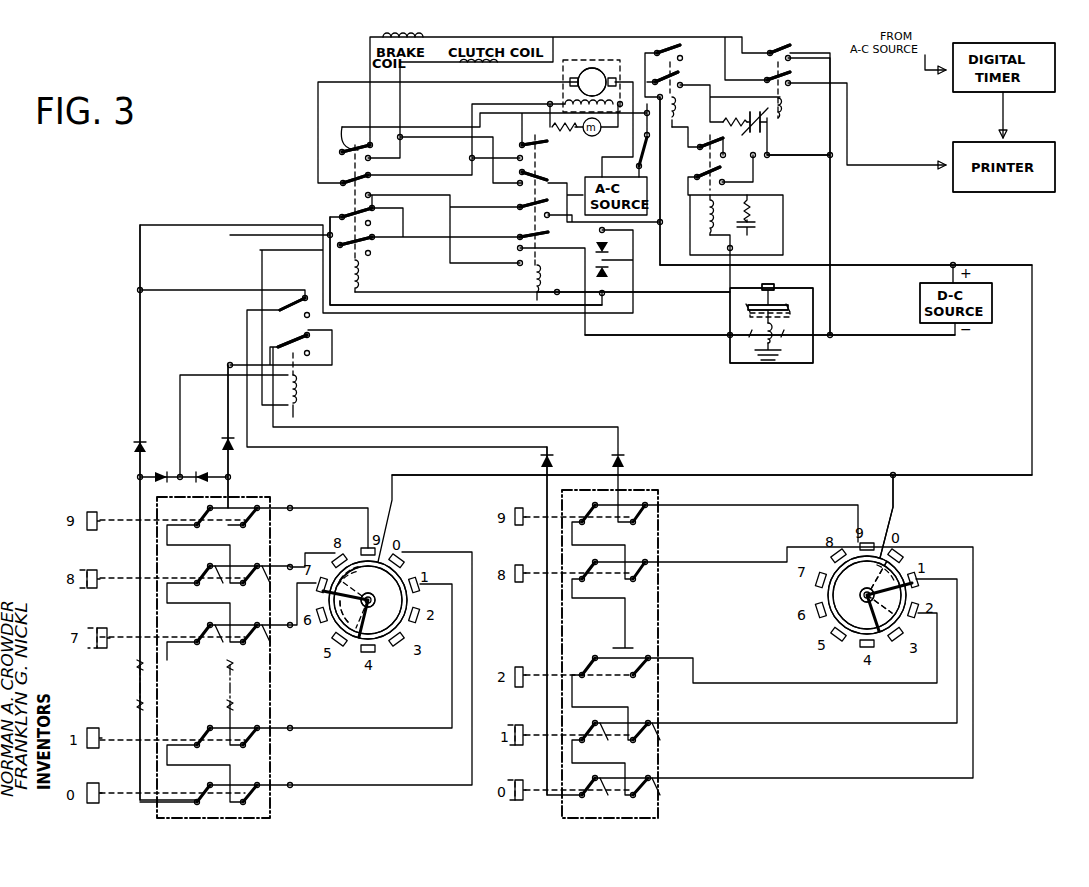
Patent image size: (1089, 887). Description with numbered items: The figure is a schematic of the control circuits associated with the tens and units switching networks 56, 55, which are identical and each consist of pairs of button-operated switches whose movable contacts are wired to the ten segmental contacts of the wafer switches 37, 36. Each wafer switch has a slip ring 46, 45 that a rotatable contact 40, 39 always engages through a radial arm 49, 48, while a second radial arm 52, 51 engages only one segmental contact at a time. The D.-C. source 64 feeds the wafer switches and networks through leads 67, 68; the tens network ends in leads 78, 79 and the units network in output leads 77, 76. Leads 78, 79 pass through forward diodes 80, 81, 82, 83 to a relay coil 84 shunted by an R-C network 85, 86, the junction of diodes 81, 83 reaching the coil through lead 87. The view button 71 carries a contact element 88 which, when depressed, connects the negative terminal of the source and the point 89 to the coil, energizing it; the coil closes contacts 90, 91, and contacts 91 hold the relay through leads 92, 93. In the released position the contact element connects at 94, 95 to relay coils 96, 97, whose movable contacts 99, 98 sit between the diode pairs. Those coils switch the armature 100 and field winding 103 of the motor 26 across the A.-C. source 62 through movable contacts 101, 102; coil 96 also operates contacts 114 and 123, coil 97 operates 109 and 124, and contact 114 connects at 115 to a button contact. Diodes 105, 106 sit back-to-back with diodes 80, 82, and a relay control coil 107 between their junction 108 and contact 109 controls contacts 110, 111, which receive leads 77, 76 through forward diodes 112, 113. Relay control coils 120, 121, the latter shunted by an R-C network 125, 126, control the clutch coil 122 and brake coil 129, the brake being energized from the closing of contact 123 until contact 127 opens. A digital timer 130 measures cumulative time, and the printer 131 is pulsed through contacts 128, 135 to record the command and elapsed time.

The brake coil 129 is at (370, 37).
The clutch coil 122 is at (497, 62).
The motor 26 is at (578, 50).
The armature 100 is at (600, 75).
The field winding 103 is at (562, 100).
The movable contact 101 is at (536, 146).
The movable contact 123 is at (536, 172).
The movable contact 99 is at (536, 205).
The contact 114 is at (536, 240).
The relay coil 96 is at (532, 279).
The relay coil 97 is at (362, 280).
The connection point 95 is at (458, 300).
The movable contact 109 is at (345, 243).
The movable contact 98 is at (340, 212).
The movable contact 102 is at (343, 183).
The movable contact 124 is at (342, 150).
The contact 135 is at (685, 50).
The contact 127 is at (785, 47).
The contact 128 is at (775, 78).
The relay control coil 121 is at (782, 108).
The relay control coil 120 is at (691, 112).
The resistor 125 is at (742, 120).
The capacitor 126 is at (762, 128).
The contacts 90 is at (722, 145).
The contacts 91 is at (718, 173).
The lead 92 is at (792, 155).
The lead 93 is at (830, 260).
The A.-C. source 62 is at (648, 190).
The forward diode 83 is at (610, 245).
The forward diode 81 is at (610, 273).
The relay coil 84 is at (724, 215).
The resistor 85 is at (750, 212).
The capacitor 86 is at (748, 229).
The lead 87 is at (690, 266).
The connection point 89 is at (760, 300).
The view button 71 is at (772, 285).
The contact element 88 is at (748, 307).
The connection point 94 is at (652, 293).
The connection point 115 is at (670, 337).
The digital timer 130 is at (1038, 92).
The printer 131 is at (1033, 192).
The D.-C. source 64 is at (985, 323).
The contact 110 is at (300, 297).
The contact 111 is at (293, 326).
The relay control coil 107 is at (300, 385).
The forward diode 82 is at (134, 446).
The diode 106 is at (160, 476).
The junction 108 is at (200, 476).
The forward diode 80 is at (226, 440).
The diode 105 is at (212, 475).
The lead 79 is at (138, 488).
The lead 78 is at (230, 497).
The lead 68 is at (485, 475).
The forward diode 112 is at (556, 460).
The forward diode 113 is at (630, 460).
The output lead 77 is at (547, 490).
The output lead 76 is at (650, 488).
The lead 67 is at (900, 505).
The tens switching network 56 is at (272, 808).
The units switching network 55 is at (660, 795).
The wafer switch 37 is at (401, 667).
The slip ring 46 is at (415, 565).
The radial arm 52 is at (361, 577).
The contact 40 is at (379, 601).
The radial arm 49 is at (364, 615).
The wafer switch 36 is at (813, 601).
The radial arm 51 is at (869, 575).
The contact 39 is at (855, 595).
The radial arm 48 is at (868, 608).
The slip ring 45 is at (835, 622).